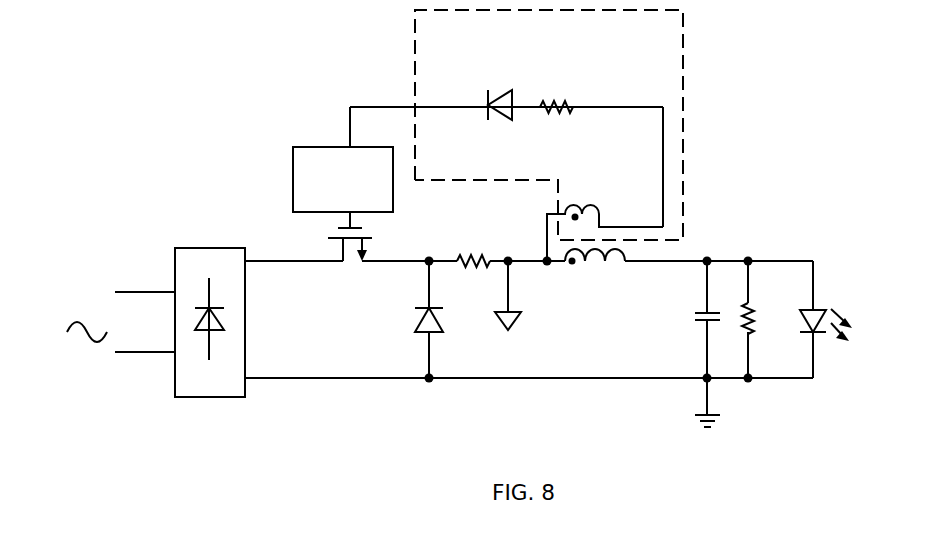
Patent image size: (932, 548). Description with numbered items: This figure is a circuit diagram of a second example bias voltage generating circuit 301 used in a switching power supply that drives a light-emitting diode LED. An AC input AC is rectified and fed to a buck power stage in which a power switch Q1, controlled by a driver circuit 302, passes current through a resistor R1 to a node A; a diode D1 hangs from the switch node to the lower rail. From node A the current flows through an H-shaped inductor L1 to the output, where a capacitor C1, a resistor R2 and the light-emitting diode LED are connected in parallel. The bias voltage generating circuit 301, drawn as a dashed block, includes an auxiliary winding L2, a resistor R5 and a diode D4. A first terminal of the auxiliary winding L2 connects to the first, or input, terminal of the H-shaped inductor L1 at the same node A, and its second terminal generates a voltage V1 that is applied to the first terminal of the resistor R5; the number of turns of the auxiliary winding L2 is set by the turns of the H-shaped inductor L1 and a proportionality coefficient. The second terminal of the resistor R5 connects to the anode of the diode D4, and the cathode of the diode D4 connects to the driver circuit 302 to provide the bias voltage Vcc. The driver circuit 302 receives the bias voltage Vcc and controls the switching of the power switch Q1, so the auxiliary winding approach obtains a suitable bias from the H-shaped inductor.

The bias voltage generating circuit 301 is at (516, 125).
The driver circuit 302 is at (293, 181).
The power switch Q1 is at (350, 252).
The resistor R1 is at (473, 247).
The diode D1 is at (449, 319).
The node A is at (517, 283).
The H-shaped inductor L1 is at (595, 274).
The auxiliary winding L2 is at (605, 220).
The voltage V1 is at (644, 167).
The capacitor C1 is at (692, 344).
The resistor R2 is at (766, 319).
The light-emitting diode LED is at (852, 325).
The diode D4 is at (504, 120).
The resistor R5 is at (557, 121).
The bias voltage Vcc is at (506, 113).
The AC input AC is at (156, 322).